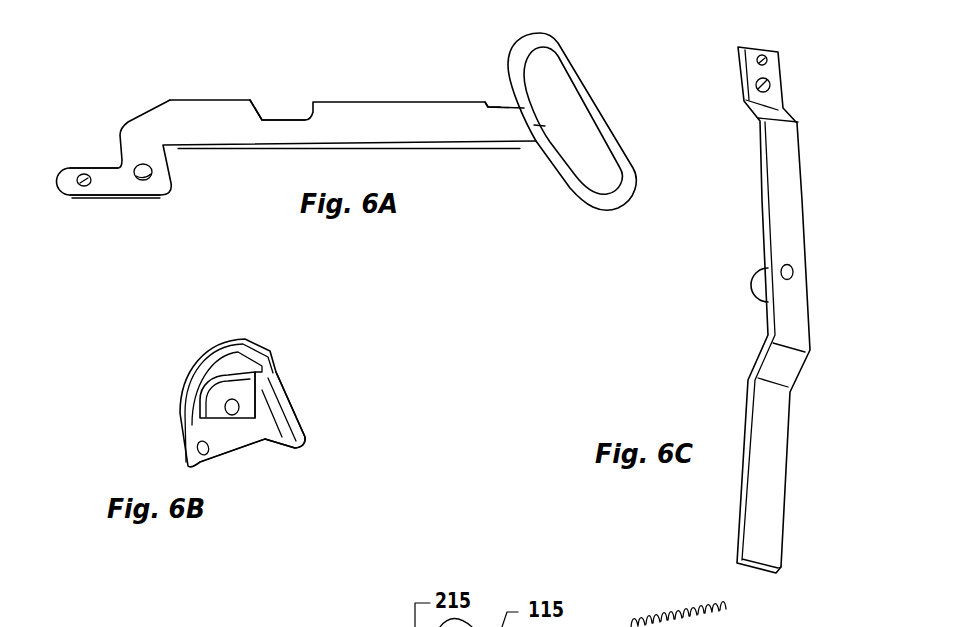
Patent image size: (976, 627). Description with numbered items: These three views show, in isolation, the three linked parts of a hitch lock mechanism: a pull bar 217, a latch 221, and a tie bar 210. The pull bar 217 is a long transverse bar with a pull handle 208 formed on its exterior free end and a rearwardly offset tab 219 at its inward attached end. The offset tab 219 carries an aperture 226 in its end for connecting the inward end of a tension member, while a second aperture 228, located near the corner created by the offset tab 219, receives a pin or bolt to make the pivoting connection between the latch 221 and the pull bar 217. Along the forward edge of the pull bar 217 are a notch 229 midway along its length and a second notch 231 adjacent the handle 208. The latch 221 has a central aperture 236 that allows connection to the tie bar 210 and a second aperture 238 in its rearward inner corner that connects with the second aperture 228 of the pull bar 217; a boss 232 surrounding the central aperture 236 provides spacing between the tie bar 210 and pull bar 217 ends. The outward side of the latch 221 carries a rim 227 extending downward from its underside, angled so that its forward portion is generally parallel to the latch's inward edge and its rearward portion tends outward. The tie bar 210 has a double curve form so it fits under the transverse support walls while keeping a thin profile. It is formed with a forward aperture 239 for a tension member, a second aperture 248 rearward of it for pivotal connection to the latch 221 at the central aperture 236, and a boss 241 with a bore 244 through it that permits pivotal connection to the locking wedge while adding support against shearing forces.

In FIG. 6A, the pull bar 217 is at (378, 107).
In FIG. 6A, the notch 229 is at (278, 110).
In FIG. 6A, the second notch 231 is at (498, 99).
In FIG. 6A, the aperture 226 is at (83, 173).
In FIG. 6A, the second aperture 228 is at (152, 173).
In FIG. 6A, the rearwardly offset tab 219 is at (105, 187).
In FIG. 6A, the pull handle 208 is at (580, 200).
In FIG. 6B, the latch 221 is at (177, 378).
In FIG. 6B, the central aperture 236 is at (222, 400).
In FIG. 6B, the rim 227 is at (288, 420).
In FIG. 6B, the second aperture 238 is at (196, 450).
In FIG. 6B, the boss 232 is at (248, 414).
In FIG. 6C, the tie bar 210 is at (777, 308).
In FIG. 6C, the forward aperture 239 is at (765, 57).
In FIG. 6C, the second aperture 248 is at (758, 85).
In FIG. 6C, the bore 244 is at (790, 264).
In FIG. 6C, the boss 241 is at (756, 281).